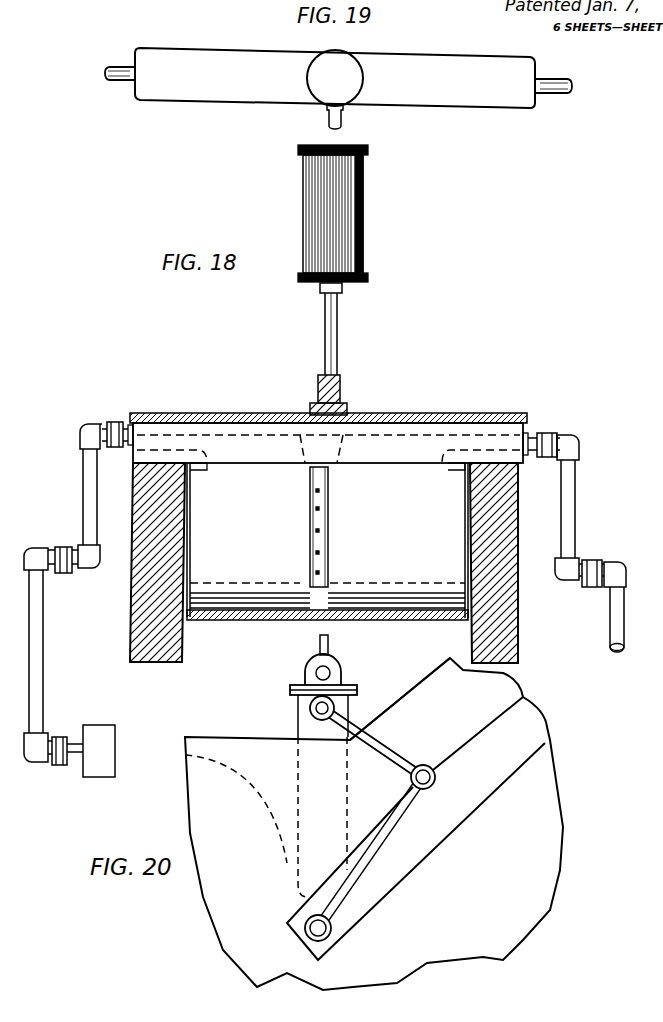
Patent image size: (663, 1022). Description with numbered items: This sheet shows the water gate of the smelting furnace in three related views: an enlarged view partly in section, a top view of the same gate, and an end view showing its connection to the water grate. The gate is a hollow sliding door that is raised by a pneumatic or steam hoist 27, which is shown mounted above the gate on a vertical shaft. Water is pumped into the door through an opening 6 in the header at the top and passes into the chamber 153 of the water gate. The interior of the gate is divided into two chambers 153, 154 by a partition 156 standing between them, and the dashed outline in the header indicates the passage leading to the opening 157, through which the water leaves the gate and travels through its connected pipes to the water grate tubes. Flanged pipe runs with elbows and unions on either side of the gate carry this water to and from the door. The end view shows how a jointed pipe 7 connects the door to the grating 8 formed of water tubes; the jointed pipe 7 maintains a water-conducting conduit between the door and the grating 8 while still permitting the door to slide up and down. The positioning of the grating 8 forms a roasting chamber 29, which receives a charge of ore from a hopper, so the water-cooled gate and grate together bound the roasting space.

In FIG. 19, the hoist 27 is at (316, 86).
In FIG. 18, the hoist 27 is at (347, 215).
In FIG. 18, the opening 6 is at (493, 442).
In FIG. 18, the opening 157 is at (163, 437).
In FIG. 18, the chamber 154 is at (248, 540).
In FIG. 18, the chamber 153 is at (398, 540).
In FIG. 18, the partition 156 is at (312, 541).
In FIG. 20, the jointed pipe 7 is at (400, 758).
In FIG. 20, the roasting chamber 29 is at (436, 714).
In FIG. 20, the grating 8 is at (416, 851).